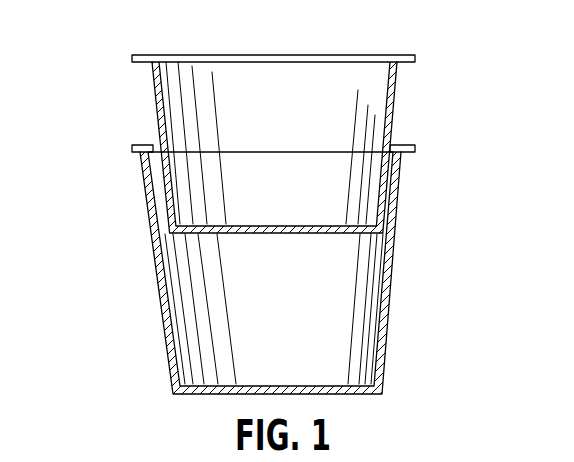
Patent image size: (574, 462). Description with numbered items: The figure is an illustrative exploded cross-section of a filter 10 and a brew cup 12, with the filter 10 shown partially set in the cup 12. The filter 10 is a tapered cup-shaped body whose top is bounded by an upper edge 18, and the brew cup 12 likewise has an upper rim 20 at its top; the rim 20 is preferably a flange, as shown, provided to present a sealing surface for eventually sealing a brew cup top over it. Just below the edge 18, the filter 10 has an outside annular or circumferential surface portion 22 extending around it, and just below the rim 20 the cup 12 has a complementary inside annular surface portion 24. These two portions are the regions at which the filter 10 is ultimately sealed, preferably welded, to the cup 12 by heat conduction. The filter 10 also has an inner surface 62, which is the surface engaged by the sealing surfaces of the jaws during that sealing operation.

The filter 10 is at (258, 122).
The brew cup 12 is at (273, 249).
The upper edge 18 is at (143, 55).
The upper rim 20 is at (136, 145).
The outside annular surface portion 22 is at (153, 81).
The inside annular surface portion 24 is at (153, 185).
The inner surface 62 is at (166, 165).